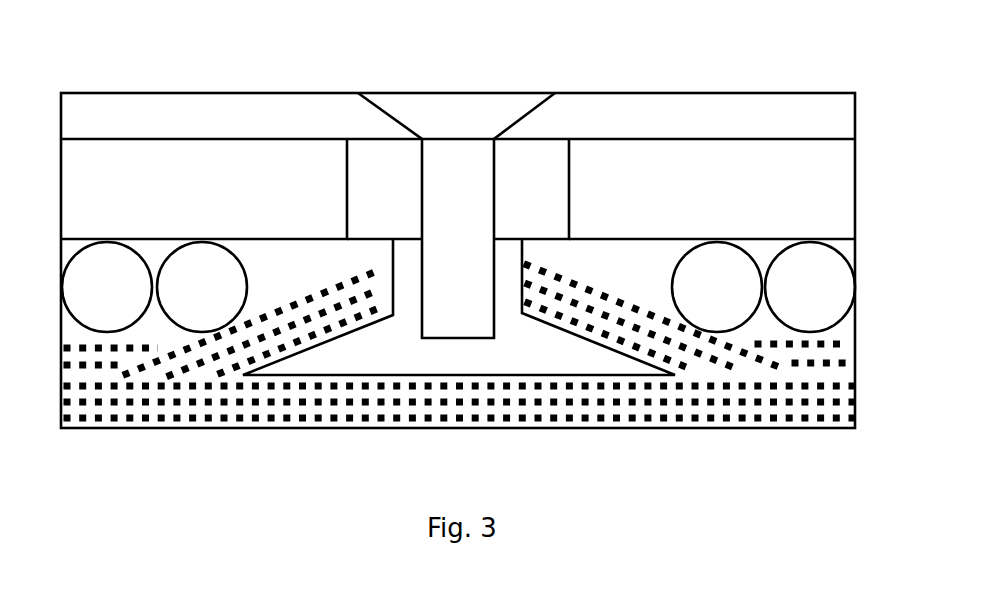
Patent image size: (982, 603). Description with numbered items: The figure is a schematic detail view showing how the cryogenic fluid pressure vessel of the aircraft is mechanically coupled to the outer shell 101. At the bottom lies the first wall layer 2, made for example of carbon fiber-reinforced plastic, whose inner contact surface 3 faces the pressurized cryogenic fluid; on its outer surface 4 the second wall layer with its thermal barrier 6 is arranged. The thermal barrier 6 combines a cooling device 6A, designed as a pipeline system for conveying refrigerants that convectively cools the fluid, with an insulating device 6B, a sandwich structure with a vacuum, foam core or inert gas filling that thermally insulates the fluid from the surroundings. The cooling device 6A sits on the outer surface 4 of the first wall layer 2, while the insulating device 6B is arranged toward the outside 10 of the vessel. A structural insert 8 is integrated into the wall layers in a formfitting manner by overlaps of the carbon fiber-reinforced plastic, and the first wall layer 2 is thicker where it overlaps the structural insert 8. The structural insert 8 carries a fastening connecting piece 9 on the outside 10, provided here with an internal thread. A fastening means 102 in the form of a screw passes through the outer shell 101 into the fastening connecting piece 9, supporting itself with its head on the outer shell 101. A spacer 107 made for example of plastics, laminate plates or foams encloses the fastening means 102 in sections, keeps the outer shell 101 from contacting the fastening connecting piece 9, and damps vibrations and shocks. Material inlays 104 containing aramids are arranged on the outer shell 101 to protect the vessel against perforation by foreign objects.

The first wall layer 2 is at (790, 372).
The inner contact surface 3 is at (670, 430).
The outer surface 4 is at (138, 341).
The thermal barrier 6 is at (458, 406).
The cooling device 6A is at (193, 302).
The insulating device 6B is at (267, 250).
The structural insert 8 is at (330, 355).
The fastening connecting piece 9 is at (497, 268).
The outside 10 is at (630, 235).
The outer shell 101 is at (775, 118).
The fastening means 102 is at (461, 152).
The material inlays 104 is at (263, 177).
The spacer 107 is at (358, 177).